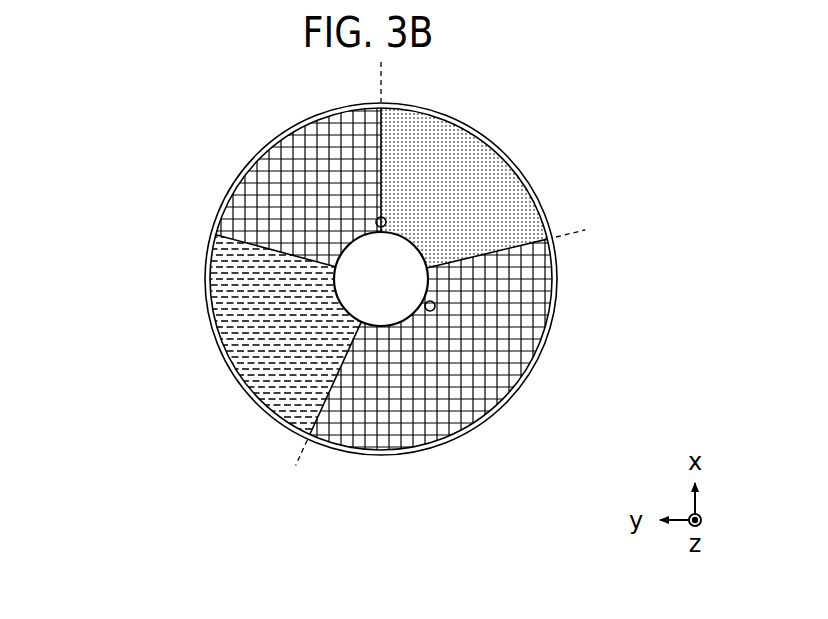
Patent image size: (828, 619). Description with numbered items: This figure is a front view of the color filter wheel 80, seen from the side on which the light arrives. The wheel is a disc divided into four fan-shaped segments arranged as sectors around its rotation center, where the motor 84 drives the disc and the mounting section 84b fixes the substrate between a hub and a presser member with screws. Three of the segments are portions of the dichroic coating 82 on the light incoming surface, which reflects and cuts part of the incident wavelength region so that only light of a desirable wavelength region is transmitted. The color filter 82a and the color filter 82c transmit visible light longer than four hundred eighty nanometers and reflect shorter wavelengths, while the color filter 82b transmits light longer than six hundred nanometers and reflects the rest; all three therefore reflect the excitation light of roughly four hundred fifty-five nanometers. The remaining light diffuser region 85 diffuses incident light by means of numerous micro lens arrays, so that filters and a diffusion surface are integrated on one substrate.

The color filter wheel 80 is at (313, 467).
The dichroic coating 82 is at (453, 440).
The color filter 82a is at (228, 214).
The color filter 82b is at (272, 325).
The color filter 82c is at (503, 353).
The motor 84 is at (428, 258).
The mounting section 84b is at (379, 261).
The light diffuser region 85 is at (458, 175).